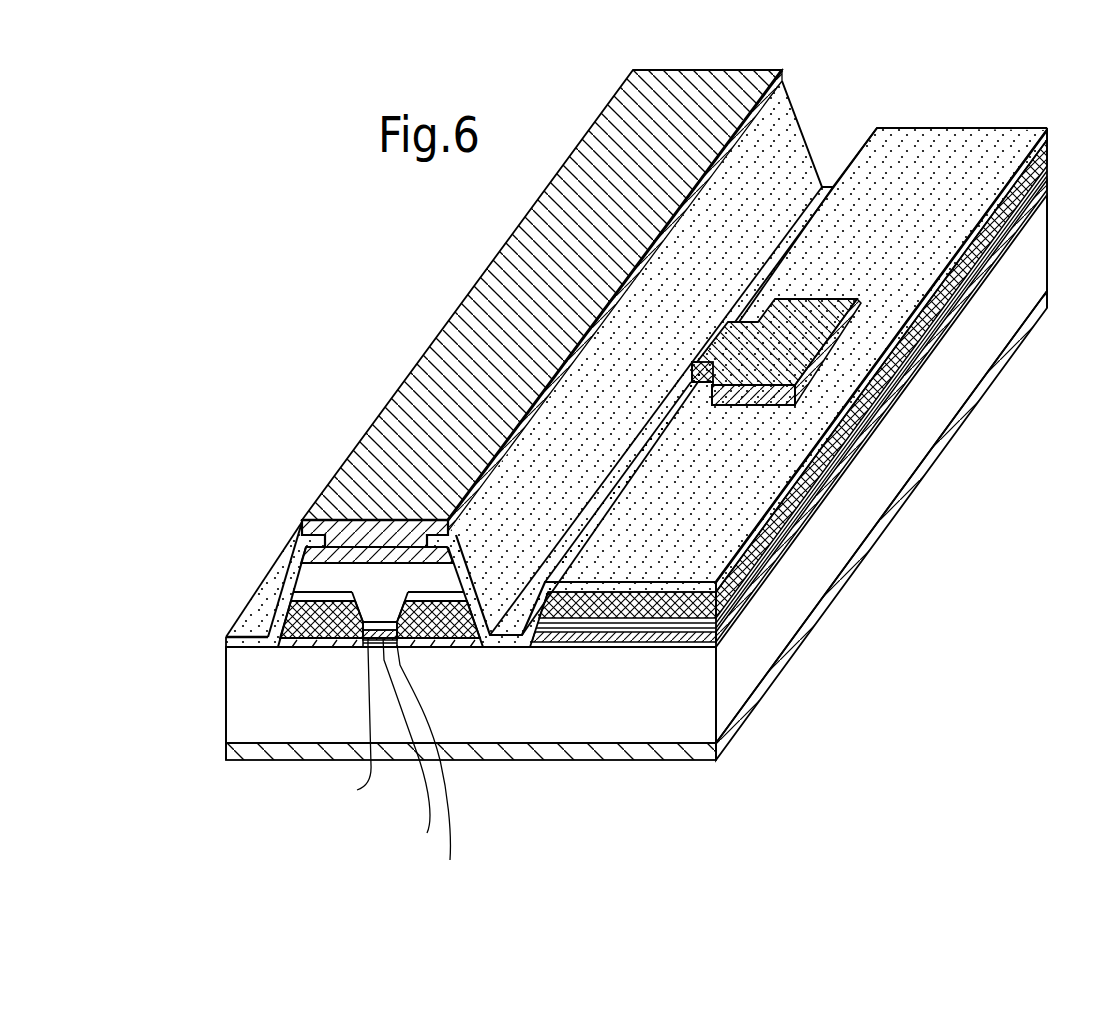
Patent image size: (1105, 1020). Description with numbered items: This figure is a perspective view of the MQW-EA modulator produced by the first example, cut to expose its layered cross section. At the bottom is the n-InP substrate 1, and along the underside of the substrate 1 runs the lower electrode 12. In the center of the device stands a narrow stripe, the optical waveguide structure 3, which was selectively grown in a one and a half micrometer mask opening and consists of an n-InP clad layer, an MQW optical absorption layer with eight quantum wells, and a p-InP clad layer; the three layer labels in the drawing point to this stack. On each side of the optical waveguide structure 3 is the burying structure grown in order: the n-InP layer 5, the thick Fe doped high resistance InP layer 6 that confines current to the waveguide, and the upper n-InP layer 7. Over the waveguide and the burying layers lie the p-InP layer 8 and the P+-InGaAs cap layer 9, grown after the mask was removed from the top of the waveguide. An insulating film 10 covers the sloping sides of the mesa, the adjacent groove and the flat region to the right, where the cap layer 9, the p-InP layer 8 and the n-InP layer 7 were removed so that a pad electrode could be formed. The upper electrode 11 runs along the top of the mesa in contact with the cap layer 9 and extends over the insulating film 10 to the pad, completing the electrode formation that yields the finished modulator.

The semiconductor substrate 1 is at (1027, 265).
The optical waveguide structure 3 is at (374, 596).
The n-InP layer 5 is at (293, 643).
The Fe doped high resistance InP layer 6 is at (295, 618).
The n-InP layer 7 is at (300, 598).
The p-InP layer 8 is at (313, 578).
The P+-InGaAs cap layer 9 is at (333, 550).
The insulating film 10 is at (908, 148).
The electrode 11 is at (690, 83).
The electrode 12 is at (628, 760).